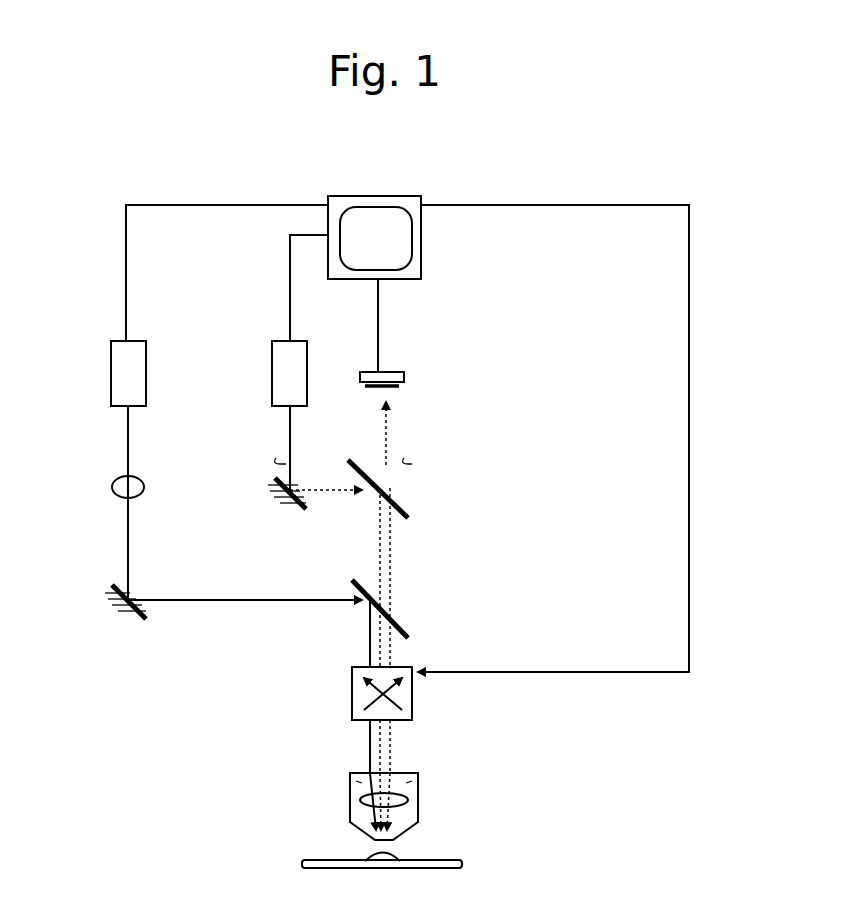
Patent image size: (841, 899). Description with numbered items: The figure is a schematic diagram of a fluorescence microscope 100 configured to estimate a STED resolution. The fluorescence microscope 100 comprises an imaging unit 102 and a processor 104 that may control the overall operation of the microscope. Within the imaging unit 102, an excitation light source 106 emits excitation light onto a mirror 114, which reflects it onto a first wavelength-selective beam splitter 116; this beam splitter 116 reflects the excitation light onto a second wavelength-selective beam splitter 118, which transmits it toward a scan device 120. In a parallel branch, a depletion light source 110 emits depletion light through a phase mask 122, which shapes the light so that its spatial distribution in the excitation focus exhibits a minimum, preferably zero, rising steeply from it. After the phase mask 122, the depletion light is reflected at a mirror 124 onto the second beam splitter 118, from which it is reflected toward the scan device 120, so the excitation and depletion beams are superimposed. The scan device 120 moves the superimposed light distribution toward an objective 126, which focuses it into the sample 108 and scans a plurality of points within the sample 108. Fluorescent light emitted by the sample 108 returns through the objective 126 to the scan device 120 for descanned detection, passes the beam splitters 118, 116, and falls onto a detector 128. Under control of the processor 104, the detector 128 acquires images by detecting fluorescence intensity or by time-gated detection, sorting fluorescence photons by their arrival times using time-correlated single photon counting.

The fluorescence microscope 100 is at (422, 385).
The imaging unit 102 is at (352, 765).
The processor 104 is at (421, 268).
The excitation light source 106 is at (272, 368).
The sample 108 is at (410, 858).
The depletion light source 110 is at (111, 372).
The mirror 114 is at (282, 505).
The first wavelength-selective beam splitter 116 is at (406, 512).
The second wavelength-selective beam splitter 118 is at (416, 592).
The scan device 120 is at (413, 710).
The phase mask 122 is at (118, 496).
The mirror 124 is at (136, 598).
The objective 126 is at (420, 798).
The detector 128 is at (405, 381).